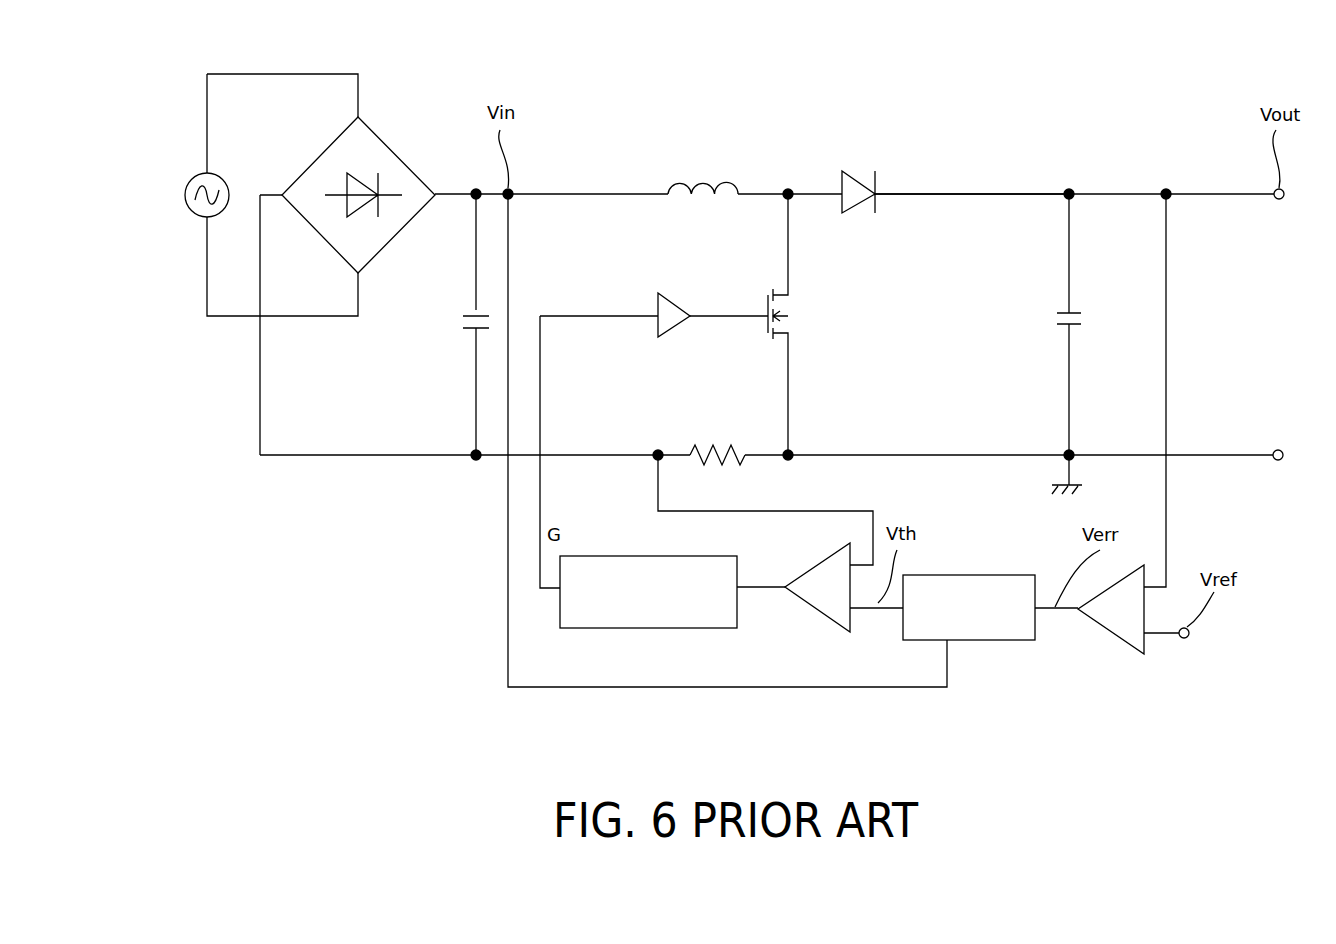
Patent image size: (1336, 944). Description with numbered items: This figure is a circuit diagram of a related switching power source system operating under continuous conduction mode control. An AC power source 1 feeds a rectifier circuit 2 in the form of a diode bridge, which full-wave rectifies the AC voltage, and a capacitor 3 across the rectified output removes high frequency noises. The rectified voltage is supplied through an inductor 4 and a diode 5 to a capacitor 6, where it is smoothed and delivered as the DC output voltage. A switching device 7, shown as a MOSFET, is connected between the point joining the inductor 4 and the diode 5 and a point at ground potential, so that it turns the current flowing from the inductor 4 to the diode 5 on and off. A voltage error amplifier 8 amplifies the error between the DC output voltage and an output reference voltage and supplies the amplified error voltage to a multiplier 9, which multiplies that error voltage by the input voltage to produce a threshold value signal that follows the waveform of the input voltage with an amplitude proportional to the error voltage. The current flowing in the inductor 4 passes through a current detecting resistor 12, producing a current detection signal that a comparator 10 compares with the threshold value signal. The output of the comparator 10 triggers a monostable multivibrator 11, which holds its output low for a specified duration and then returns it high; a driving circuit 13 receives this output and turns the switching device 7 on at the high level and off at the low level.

The AC power source 1 is at (194, 210).
The rectifier circuit 2 is at (377, 150).
The capacitor 3 is at (465, 325).
The inductor 4 is at (677, 180).
The diode 5 is at (857, 185).
The capacitor 6 is at (972, 221).
The switching device 7 is at (785, 300).
The voltage error amplifier 8 is at (1124, 629).
The multiplier 9 is at (1000, 640).
The comparator 10 is at (828, 600).
The monostable multivibrator 11 is at (652, 628).
The current detecting resistor 12 is at (745, 462).
The driving circuit 13 is at (678, 305).